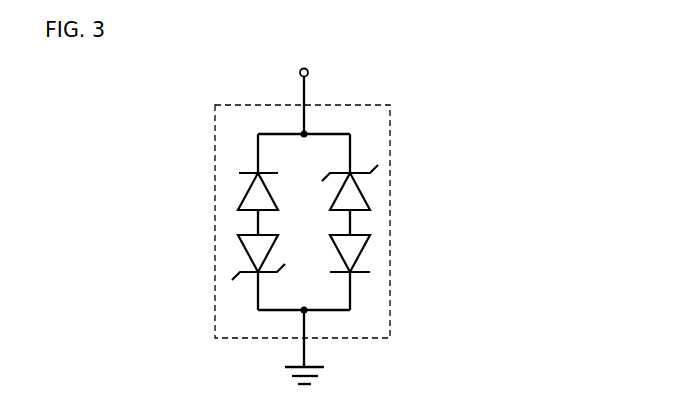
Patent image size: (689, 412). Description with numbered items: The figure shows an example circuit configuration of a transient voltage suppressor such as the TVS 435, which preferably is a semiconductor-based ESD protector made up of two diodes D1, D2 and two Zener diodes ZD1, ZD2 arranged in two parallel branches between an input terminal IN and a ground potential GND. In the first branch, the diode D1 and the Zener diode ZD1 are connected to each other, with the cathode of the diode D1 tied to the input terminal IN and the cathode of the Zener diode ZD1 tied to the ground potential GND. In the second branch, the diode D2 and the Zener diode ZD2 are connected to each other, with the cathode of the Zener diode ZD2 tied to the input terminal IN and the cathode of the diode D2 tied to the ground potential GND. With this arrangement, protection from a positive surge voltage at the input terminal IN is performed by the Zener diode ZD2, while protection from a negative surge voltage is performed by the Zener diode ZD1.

The TVS 435 is at (357, 103).
The diode D1 is at (247, 190).
The diode D2 is at (360, 250).
The Zener diode ZD1 is at (247, 252).
The Zener diode ZD2 is at (360, 190).
The input terminal IN is at (318, 66).
The ground potential GND is at (325, 381).